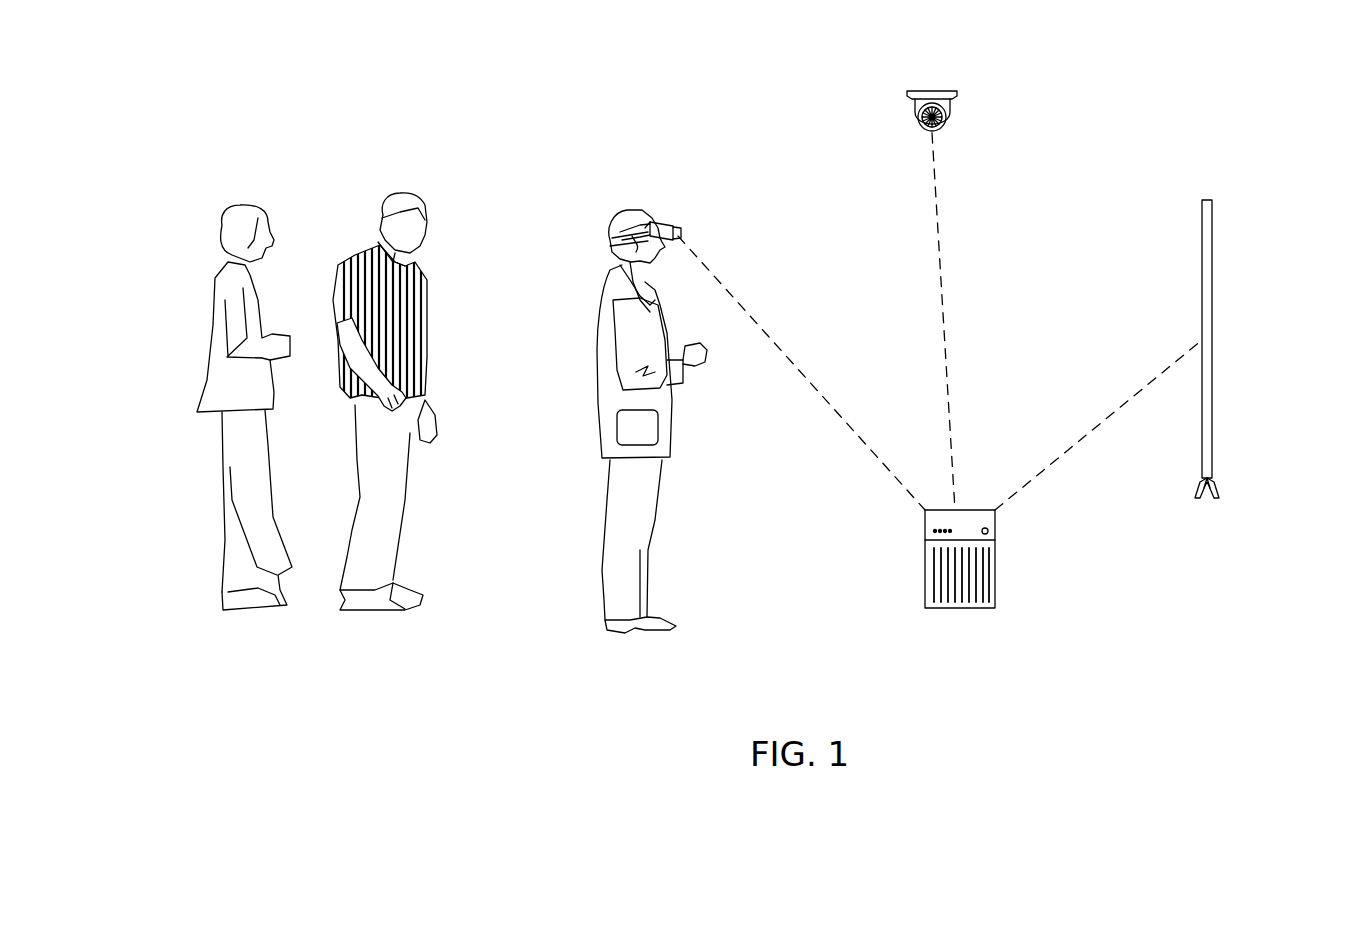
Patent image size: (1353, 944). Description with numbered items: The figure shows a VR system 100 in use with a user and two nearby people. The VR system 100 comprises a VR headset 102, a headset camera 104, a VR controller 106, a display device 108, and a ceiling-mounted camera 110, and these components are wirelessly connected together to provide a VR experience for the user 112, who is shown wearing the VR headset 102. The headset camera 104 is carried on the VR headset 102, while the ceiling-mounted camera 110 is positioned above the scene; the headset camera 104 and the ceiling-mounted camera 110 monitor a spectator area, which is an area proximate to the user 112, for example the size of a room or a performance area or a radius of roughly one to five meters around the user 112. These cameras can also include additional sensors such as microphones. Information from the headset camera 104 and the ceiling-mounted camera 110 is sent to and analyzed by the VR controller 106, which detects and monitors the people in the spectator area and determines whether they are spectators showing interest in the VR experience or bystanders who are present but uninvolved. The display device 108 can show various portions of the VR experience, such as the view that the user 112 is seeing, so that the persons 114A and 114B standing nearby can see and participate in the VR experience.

The VR system 100 is at (1190, 56).
The VR headset 102 is at (631, 210).
The headset camera 104 is at (674, 227).
The VR controller 106 is at (996, 575).
The display device 108 is at (1213, 277).
The ceiling-mounted camera 110 is at (955, 115).
The user 112 is at (603, 289).
The person 114A is at (372, 236).
The person 114B is at (222, 275).